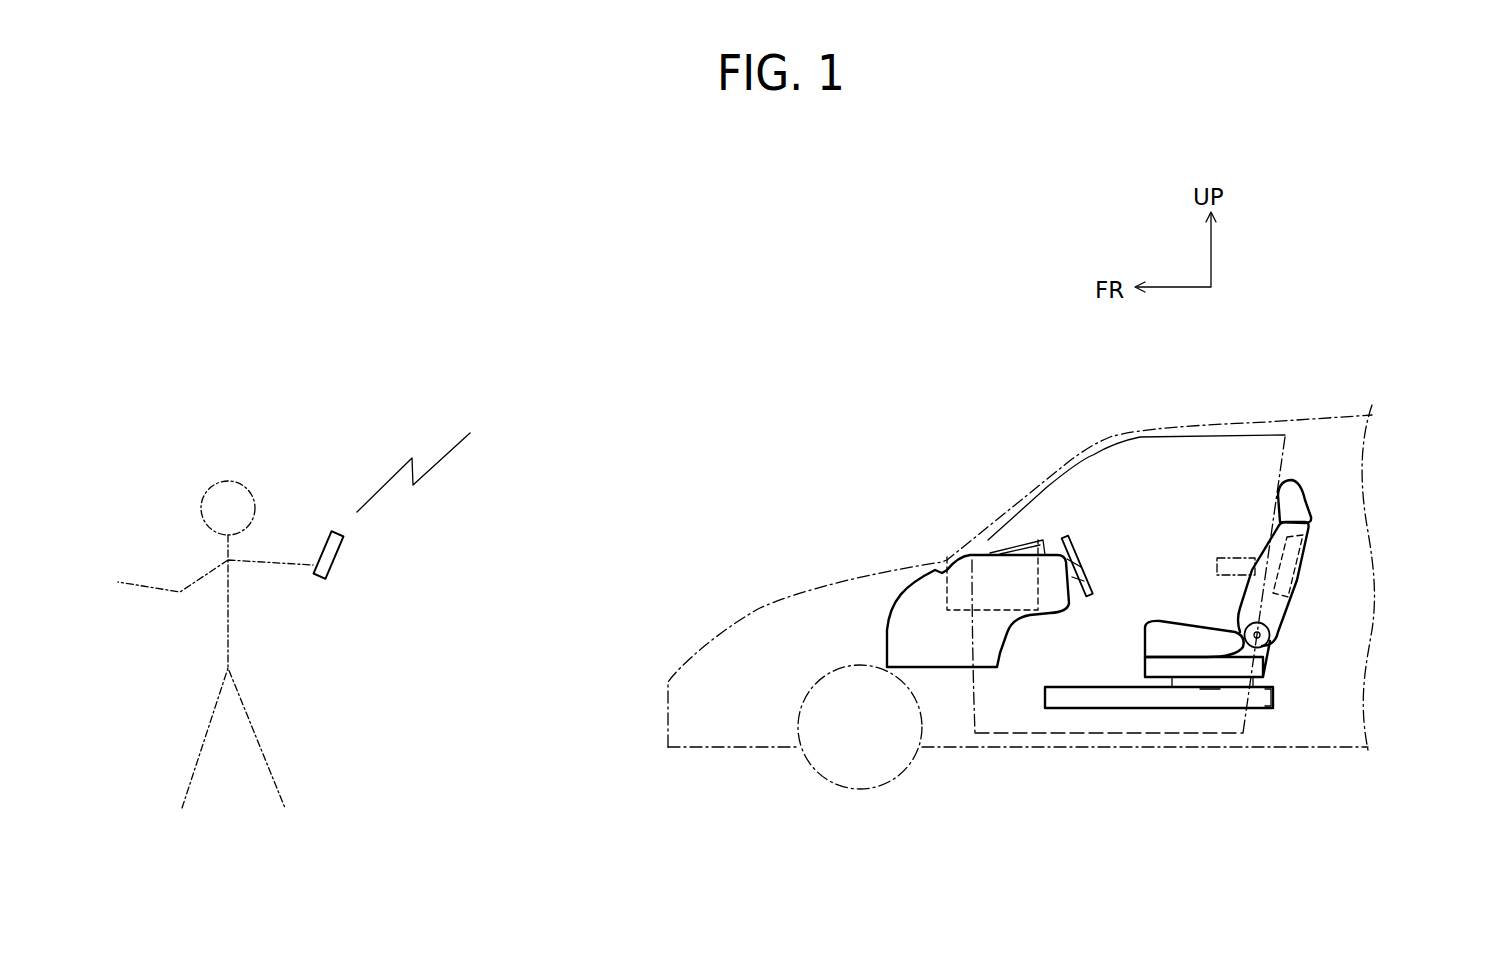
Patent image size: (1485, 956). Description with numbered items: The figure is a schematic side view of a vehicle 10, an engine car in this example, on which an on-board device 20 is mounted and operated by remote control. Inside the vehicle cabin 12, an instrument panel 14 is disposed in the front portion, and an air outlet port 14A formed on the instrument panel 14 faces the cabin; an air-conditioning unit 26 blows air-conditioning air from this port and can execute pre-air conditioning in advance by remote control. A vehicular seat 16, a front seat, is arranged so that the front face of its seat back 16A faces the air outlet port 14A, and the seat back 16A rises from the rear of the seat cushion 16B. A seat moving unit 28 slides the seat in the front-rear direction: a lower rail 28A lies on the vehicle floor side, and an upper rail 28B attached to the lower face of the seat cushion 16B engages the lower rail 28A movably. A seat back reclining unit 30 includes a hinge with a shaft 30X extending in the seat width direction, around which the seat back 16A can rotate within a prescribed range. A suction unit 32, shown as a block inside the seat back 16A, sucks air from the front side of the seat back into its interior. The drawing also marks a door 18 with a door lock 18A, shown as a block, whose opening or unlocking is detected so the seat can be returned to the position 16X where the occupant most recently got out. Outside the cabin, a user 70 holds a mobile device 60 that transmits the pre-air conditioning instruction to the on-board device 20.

The vehicle 10 is at (1326, 400).
The vehicle cabin 12 is at (1159, 494).
The instrument panel 14 is at (1042, 620).
The air outlet port 14A is at (1040, 540).
The vehicular seat 16 is at (1228, 597).
The position at the time when the occupant most recently got out of the vehicle 16X is at (1264, 585).
The seat back 16A is at (1270, 547).
The seat cushion 16B is at (1187, 630).
The door 18 is at (1135, 737).
The door lock 18A is at (1225, 558).
The on-board device 20 is at (1337, 656).
The air-conditioning unit 26 is at (943, 592).
The seat moving unit 28 is at (1307, 683).
The lower rail 28A is at (1273, 697).
The upper rail 28B is at (1210, 683).
The seat back reclining unit 30 is at (1272, 643).
The shaft 30X is at (1285, 614).
The suction unit 32 is at (1302, 557).
The mobile device 60 is at (338, 555).
The user 70 is at (210, 628).